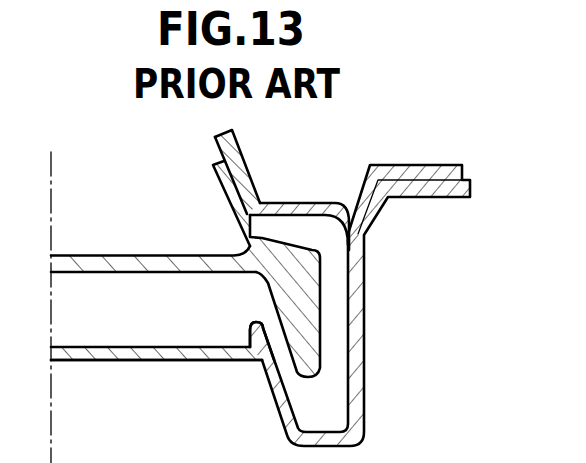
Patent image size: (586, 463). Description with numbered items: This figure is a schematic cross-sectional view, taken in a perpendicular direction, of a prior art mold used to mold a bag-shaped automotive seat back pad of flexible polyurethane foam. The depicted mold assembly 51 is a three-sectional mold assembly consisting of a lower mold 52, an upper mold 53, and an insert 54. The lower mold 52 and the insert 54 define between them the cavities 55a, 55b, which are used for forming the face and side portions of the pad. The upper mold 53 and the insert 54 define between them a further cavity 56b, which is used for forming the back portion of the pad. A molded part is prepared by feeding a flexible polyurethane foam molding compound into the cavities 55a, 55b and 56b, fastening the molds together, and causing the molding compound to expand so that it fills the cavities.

The mold assembly 51 is at (225, 362).
The lower mold 52 is at (172, 362).
The upper mold 53 is at (235, 161).
The insert 54 is at (133, 254).
The cavity 55a is at (96, 334).
The cavity 55b is at (343, 314).
The cavity 56b is at (300, 230).